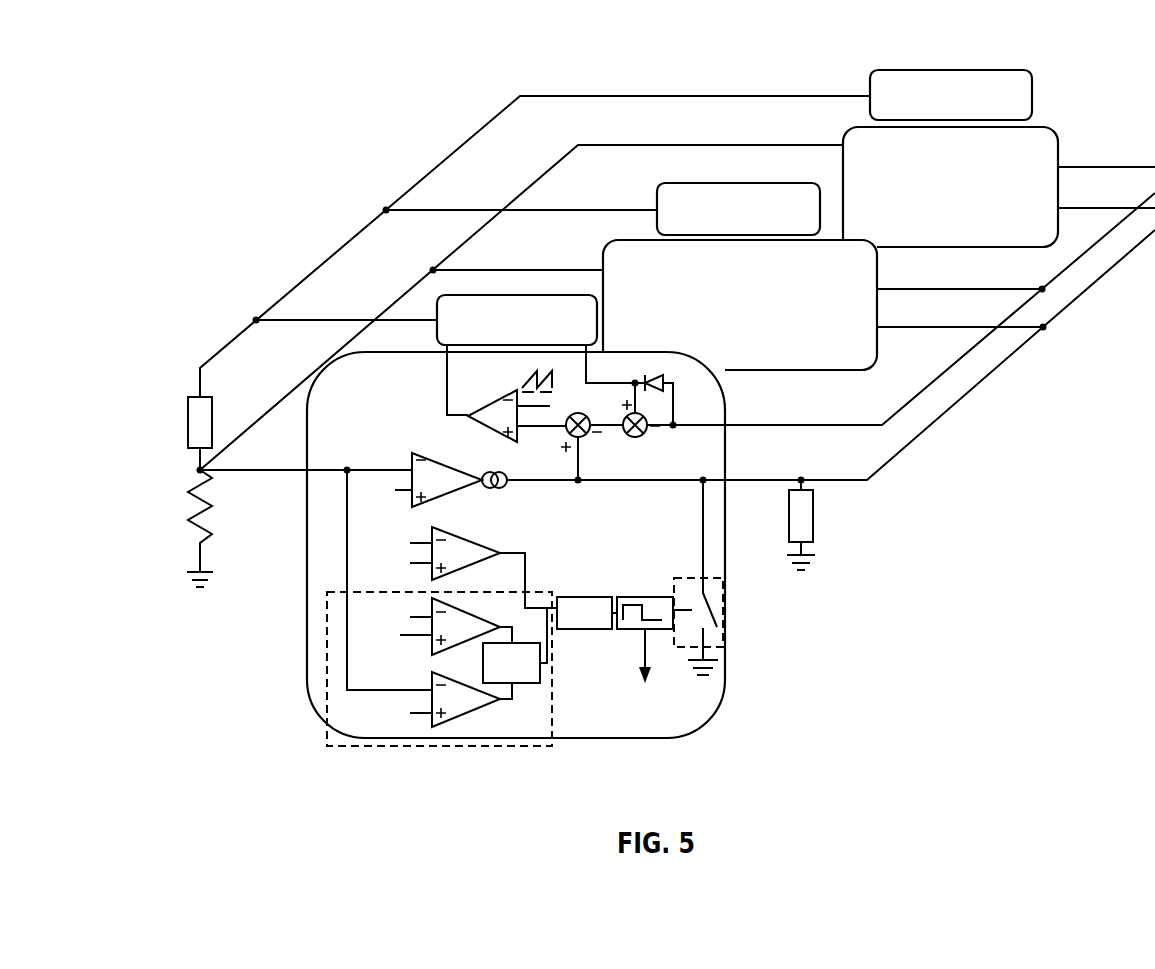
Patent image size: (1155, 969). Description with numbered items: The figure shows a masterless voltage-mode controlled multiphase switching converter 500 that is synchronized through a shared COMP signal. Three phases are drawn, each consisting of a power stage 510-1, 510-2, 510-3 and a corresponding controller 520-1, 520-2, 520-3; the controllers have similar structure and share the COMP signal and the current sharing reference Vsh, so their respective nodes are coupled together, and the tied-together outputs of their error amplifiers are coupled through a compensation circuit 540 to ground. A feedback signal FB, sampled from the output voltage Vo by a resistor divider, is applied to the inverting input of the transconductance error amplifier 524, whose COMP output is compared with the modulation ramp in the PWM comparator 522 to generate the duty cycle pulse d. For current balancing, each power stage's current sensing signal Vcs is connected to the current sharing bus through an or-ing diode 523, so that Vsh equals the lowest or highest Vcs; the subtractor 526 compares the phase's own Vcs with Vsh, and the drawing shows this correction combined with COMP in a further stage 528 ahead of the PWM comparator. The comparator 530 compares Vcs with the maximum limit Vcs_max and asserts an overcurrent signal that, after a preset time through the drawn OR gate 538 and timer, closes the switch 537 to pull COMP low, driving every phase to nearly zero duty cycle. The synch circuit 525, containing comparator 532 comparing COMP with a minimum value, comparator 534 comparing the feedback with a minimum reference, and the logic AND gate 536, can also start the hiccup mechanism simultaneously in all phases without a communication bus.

The multiphase switching converter 500 is at (262, 104).
The power stage 510-1 is at (440, 297).
The power stage 510-2 is at (672, 183).
The power stage 510-3 is at (1023, 70).
The controller 520-1 is at (397, 405).
The controller 520-2 is at (688, 276).
The controller 520-3 is at (925, 164).
The PWM comparator 522 is at (485, 429).
The or-ing diode 523 is at (653, 377).
The error amplifier 524 is at (445, 500).
The synch circuit 525 is at (327, 746).
The subtractor 526 is at (648, 438).
The multiplier 528 is at (566, 440).
The comparator 530 is at (485, 543).
The comparator 532 is at (463, 643).
The comparator 534 is at (450, 718).
The logic AND gate 536 is at (522, 683).
The switch 537 is at (725, 668).
The OR gate 538 is at (585, 597).
The compensation circuit 540 is at (813, 515).